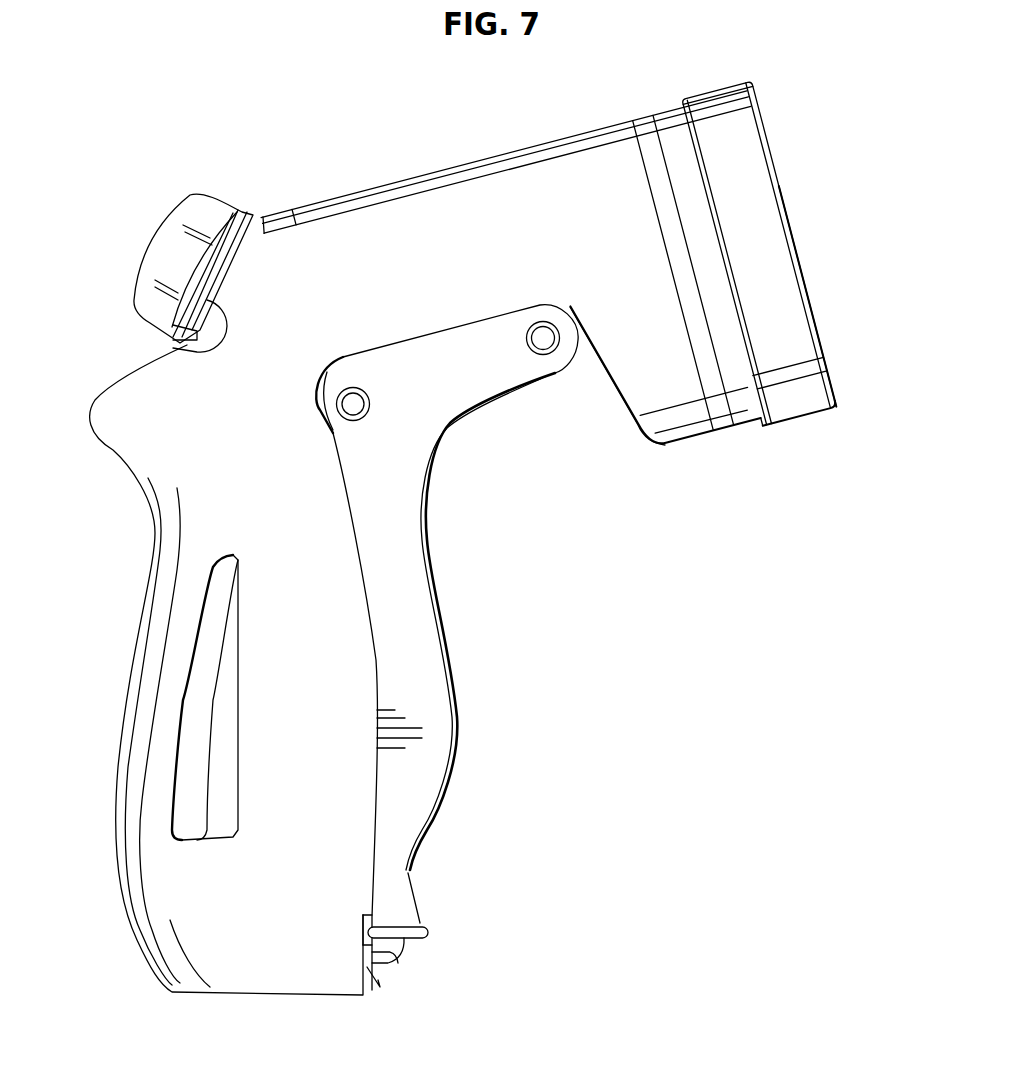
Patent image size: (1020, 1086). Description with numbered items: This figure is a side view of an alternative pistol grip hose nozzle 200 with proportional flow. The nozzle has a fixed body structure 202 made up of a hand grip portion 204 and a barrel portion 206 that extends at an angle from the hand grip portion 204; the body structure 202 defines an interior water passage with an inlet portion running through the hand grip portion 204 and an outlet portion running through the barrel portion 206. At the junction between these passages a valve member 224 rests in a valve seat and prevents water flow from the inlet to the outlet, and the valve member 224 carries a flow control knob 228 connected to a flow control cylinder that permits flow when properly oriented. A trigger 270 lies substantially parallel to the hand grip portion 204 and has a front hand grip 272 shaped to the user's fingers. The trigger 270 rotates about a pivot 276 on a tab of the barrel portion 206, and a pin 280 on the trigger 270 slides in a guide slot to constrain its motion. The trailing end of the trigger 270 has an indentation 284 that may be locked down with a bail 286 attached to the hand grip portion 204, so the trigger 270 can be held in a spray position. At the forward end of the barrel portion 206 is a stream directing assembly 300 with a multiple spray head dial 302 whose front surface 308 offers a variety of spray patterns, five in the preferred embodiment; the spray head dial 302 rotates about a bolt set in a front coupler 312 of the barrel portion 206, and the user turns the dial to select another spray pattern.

The pistol nozzle 200 is at (393, 142).
The body structure 202 is at (284, 207).
The hand grip portion 204 is at (223, 900).
The barrel portion 206 is at (507, 150).
The valve member 224 is at (173, 343).
The flow control knob 228 is at (197, 205).
The trigger 270 is at (410, 548).
The front hand grip 272 is at (453, 648).
The pivot 276 is at (550, 343).
The pin 280 is at (363, 403).
The indentation 284 is at (420, 947).
The bail 286 is at (428, 933).
The stream directing assembly 300 is at (803, 177).
The spray head dial 302 is at (718, 97).
The front surface 308 is at (803, 273).
The front coupler 312 is at (680, 420).